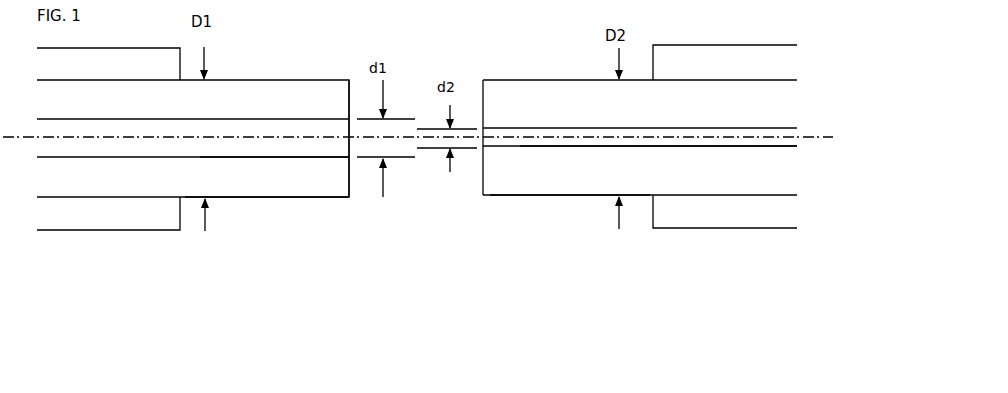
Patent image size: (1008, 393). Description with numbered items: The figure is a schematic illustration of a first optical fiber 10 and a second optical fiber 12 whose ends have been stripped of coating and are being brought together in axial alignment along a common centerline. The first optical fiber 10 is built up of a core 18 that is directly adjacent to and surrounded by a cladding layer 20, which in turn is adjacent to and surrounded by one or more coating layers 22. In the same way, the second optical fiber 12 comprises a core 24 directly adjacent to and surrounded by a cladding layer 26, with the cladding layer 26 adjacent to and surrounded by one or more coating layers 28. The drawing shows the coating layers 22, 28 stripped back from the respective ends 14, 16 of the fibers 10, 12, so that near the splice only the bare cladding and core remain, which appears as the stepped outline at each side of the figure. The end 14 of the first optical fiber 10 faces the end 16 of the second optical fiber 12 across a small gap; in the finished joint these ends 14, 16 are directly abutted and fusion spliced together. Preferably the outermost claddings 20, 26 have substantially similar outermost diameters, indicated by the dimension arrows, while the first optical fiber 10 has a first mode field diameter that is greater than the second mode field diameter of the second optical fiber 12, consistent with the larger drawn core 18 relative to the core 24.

The first optical fiber 10 is at (242, 93).
The second optical fiber 12 is at (545, 93).
The end of the first optical fiber 14 is at (356, 196).
The end of the second optical fiber 16 is at (480, 197).
The core 18 is at (274, 140).
The cladding layer 20 is at (242, 188).
The coating layers 22 is at (116, 220).
The core 24 is at (528, 139).
The cladding layer 26 is at (497, 187).
The coating layers 28 is at (705, 218).